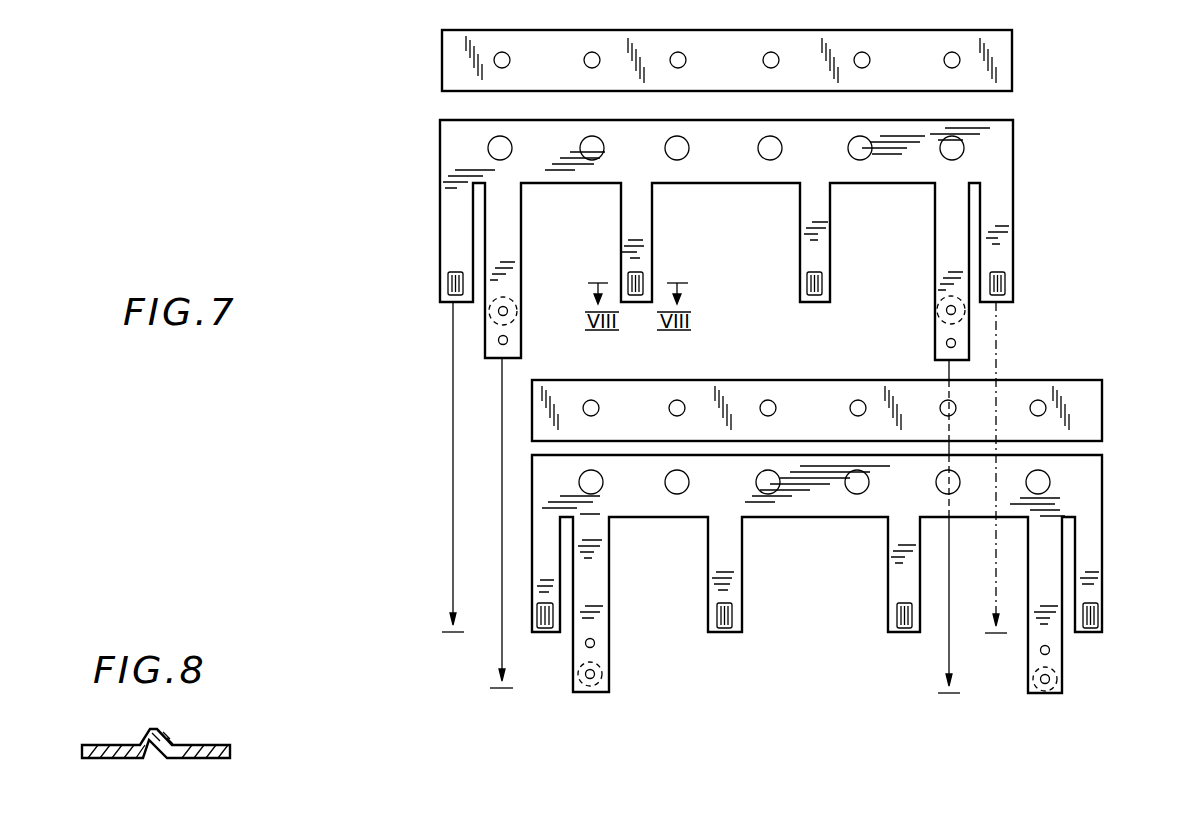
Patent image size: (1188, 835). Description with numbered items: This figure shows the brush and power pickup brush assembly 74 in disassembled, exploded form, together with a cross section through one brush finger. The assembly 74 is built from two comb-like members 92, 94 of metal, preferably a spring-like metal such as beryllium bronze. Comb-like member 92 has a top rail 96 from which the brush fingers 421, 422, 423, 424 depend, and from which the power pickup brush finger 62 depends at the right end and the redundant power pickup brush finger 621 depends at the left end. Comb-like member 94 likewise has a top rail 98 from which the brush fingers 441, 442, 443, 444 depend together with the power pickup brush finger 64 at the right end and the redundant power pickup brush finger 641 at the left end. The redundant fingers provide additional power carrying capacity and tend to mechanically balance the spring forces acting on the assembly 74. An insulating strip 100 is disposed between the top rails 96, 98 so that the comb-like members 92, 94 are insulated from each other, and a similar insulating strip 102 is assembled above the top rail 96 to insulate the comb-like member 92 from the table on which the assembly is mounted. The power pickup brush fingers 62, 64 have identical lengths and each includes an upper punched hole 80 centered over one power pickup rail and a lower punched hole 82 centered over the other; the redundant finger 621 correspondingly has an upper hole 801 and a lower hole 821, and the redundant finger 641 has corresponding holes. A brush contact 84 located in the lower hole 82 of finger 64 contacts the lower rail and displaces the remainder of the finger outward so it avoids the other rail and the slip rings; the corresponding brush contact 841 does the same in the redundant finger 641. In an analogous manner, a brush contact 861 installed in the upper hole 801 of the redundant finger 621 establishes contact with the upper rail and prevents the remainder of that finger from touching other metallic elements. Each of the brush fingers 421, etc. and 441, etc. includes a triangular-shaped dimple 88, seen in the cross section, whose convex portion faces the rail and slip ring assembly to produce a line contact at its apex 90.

In FIG. 7, the brush and power pickup brush assembly 74 is at (396, 135).
In FIG. 7, the insulating strip 102 is at (1013, 82).
In FIG. 7, the top rail 96 is at (803, 150).
In FIG. 7, the comb-like member 92 is at (752, 229).
In FIG. 7, the brush finger 421 is at (440, 250).
In FIG. 7, the brush finger 422 is at (621, 237).
In FIG. 8, the brush finger 422 is at (226, 745).
In FIG. 7, the brush finger 423 is at (800, 258).
In FIG. 7, the brush finger 424 is at (1013, 248).
In FIG. 7, the redundant power pickup brush finger 621 is at (522, 208).
In FIG. 7, the power pickup brush finger 62 is at (935, 217).
In FIG. 7, the upper punched hole 801 is at (630, 649).
In FIG. 7, the brush contact 861 is at (522, 319).
In FIG. 7, the lower punched hole 821 is at (633, 685).
In FIG. 7, the upper punched hole 80 is at (946, 310).
In FIG. 7, the lower punched hole 82 is at (946, 343).
In FIG. 7, the triangular-shaped dimple 88 is at (630, 303).
In FIG. 8, the triangular-shaped dimple 88 is at (163, 740).
In FIG. 7, the insulating strip 100 is at (1100, 382).
In FIG. 7, the comb-like member 94 is at (838, 574).
In FIG. 7, the top rail 98 is at (793, 517).
In FIG. 7, the brush finger 441 is at (531, 594).
In FIG. 7, the brush finger 442 is at (742, 558).
In FIG. 7, the brush finger 443 is at (888, 560).
In FIG. 7, the brush finger 444 is at (1103, 545).
In FIG. 7, the redundant power pickup brush finger 641 is at (609, 571).
In FIG. 7, the power pickup brush finger 64 is at (1028, 590).
In FIG. 7, the brush contact 841 is at (592, 693).
In FIG. 7, the brush contact 84 is at (1035, 694).
In FIG. 8, the apex 90 is at (153, 735).